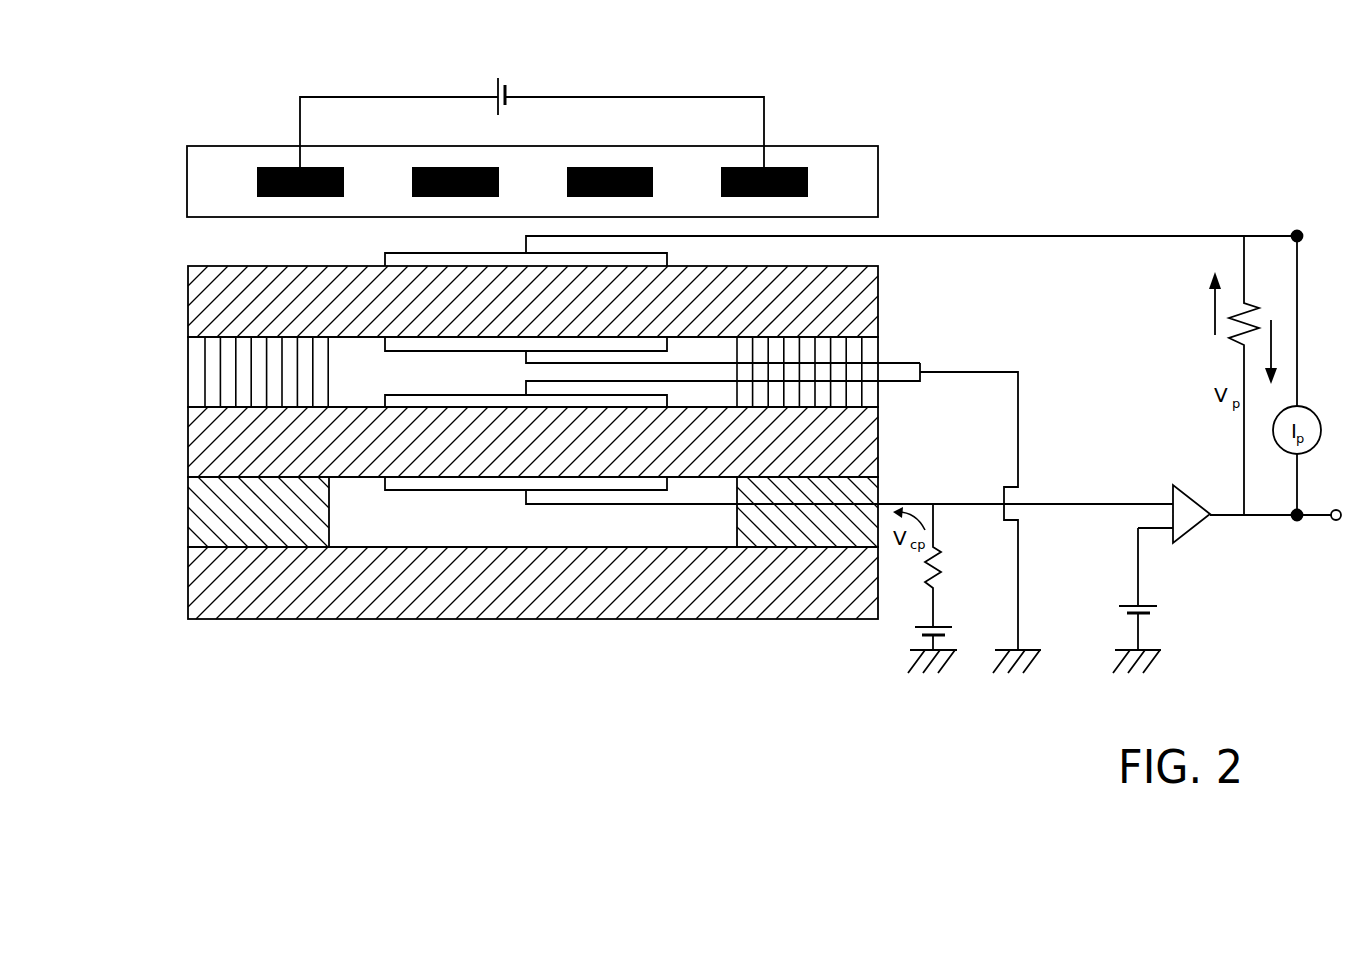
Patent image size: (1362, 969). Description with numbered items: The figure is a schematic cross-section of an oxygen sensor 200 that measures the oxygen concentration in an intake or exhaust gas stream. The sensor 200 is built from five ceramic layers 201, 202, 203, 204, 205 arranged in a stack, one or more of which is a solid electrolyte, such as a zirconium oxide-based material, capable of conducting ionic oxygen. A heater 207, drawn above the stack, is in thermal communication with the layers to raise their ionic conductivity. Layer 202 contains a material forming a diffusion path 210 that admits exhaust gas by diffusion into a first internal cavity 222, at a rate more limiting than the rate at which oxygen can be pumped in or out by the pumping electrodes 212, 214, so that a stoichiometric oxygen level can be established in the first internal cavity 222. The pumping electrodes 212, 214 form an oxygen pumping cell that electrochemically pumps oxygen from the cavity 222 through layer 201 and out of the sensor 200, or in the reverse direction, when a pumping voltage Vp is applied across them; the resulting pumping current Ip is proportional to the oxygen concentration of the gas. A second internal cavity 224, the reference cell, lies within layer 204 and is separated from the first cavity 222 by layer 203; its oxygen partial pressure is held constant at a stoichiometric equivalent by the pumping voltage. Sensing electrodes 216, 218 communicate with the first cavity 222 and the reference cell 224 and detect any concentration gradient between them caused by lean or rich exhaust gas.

The oxygen sensor 200 is at (868, 88).
The ceramic layer 201 is at (188, 280).
The ceramic layer 202 is at (188, 350).
The ceramic layer 203 is at (188, 465).
The ceramic layer 204 is at (188, 537).
The ceramic layer 205 is at (188, 608).
The heater 207 is at (256, 170).
The diffusion path 210 is at (223, 387).
The pumping electrode 212 is at (386, 253).
The pumping electrode 214 is at (387, 351).
The sensing electrode 216 is at (387, 395).
The sensing electrode 218 is at (387, 491).
The first internal cavity 222 is at (488, 381).
The second internal cavity 224 is at (488, 530).